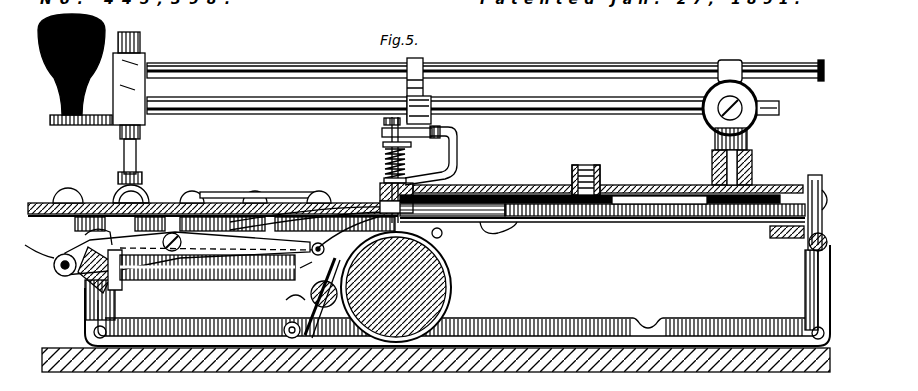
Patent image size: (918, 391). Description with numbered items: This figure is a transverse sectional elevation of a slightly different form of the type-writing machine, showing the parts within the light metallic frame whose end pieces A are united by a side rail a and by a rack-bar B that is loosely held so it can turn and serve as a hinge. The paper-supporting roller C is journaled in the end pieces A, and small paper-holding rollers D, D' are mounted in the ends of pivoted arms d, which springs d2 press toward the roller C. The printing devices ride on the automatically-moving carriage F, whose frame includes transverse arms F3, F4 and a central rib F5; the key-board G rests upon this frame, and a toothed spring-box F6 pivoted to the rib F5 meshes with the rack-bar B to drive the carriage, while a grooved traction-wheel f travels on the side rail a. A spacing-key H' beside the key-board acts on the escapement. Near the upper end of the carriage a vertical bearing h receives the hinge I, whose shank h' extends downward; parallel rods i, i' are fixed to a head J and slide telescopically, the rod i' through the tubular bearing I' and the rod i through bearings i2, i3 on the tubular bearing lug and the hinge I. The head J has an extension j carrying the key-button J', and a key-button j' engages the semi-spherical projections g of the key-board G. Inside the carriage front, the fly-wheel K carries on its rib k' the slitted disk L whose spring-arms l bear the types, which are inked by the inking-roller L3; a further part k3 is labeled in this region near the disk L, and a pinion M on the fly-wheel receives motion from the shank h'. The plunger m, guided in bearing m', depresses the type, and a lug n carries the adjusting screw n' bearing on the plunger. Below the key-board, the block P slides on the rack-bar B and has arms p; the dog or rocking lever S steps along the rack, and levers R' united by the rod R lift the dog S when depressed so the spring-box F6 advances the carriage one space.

The end pieces A is at (620, 312).
The rack-bar B is at (85, 288).
The paper-supporting roller C is at (448, 285).
The small roller D is at (295, 289).
The small roller D' is at (448, 237).
The lever pivot E is at (307, 234).
The carriage F is at (602, 193).
The transverse arm F3 is at (277, 203).
The transverse arm F4 is at (40, 202).
The central rib F5 is at (217, 244).
The spring-box F6 is at (215, 282).
The key-board G is at (100, 203).
The spacing-key H' is at (265, 200).
The hinge I is at (741, 108).
The tubular bearing I' is at (618, 119).
The head J is at (111, 78).
The key-button J' is at (79, 64).
The bracket Jr is at (442, 156).
The bracket foot Jr' is at (377, 197).
The fly-wheel K is at (490, 228).
The annular slitted disk L is at (548, 222).
The inking-roller L3 is at (786, 238).
The gear-pinion M is at (582, 173).
The metallic block P is at (124, 286).
The rod R is at (187, 221).
The lever R' is at (112, 270).
The rocking lever S is at (98, 237).
The side rail a is at (808, 244).
The pivoted arm d is at (305, 300).
The spring d2 is at (284, 322).
The traction-wheel f is at (815, 174).
The semi-spherical projection g is at (316, 192).
The vertical bearing h is at (743, 167).
The stem or shank h' is at (713, 149).
The parallel rod i is at (485, 64).
The parallel rod i' is at (427, 100).
The bearing i2 is at (412, 58).
The bearing i3 is at (732, 62).
The extension j is at (117, 154).
The key-button j' is at (134, 182).
The rib k' is at (660, 230).
The slot k3 is at (640, 197).
The spring-arm l is at (722, 225).
The plunger m is at (384, 160).
The vertical bearing m' is at (410, 165).
The lug n is at (397, 170).
The adjustable screw n' is at (382, 123).
The arm p is at (35, 270).
The spring s is at (306, 263).